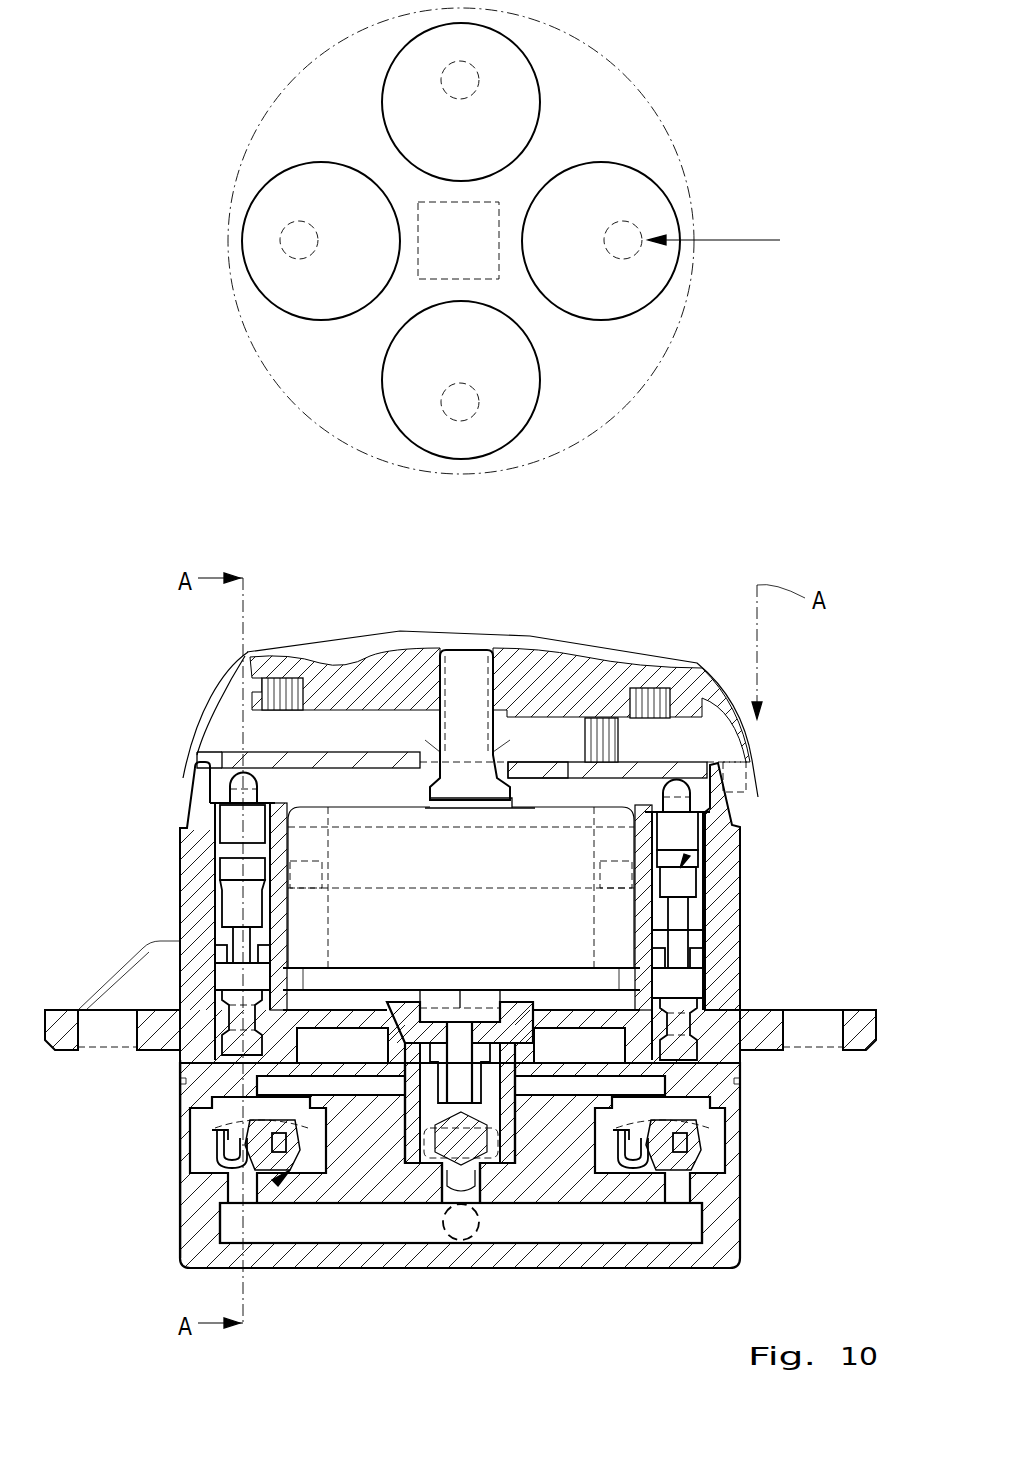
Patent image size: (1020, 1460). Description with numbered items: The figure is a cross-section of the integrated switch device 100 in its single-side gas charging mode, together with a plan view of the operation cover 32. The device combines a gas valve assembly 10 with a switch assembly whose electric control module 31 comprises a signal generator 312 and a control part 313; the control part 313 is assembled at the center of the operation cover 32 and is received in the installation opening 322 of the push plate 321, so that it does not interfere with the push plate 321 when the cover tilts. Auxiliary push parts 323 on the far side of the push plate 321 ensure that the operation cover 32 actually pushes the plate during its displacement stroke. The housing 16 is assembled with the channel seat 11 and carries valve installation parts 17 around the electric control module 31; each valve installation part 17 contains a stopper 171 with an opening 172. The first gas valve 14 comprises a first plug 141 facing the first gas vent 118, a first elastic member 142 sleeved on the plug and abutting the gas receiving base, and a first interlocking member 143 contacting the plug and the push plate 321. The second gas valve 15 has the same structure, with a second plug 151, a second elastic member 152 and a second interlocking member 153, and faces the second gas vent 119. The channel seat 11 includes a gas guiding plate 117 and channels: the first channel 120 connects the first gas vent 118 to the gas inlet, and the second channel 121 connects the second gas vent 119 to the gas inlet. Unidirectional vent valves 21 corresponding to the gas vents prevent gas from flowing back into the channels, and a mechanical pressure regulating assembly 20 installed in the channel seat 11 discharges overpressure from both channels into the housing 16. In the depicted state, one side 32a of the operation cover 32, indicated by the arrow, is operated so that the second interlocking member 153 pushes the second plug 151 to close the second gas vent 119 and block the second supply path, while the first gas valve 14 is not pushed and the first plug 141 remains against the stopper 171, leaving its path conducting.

The integrated switch device 100 is at (862, 66).
The operation cover 32 is at (672, 140).
The one side of the operation cover 32a is at (745, 243).
The control part 313 is at (430, 198).
The electric control module 31 is at (465, 550).
The signal generator 312 is at (357, 798).
The installation opening 322 is at (525, 770).
The auxiliary push parts 323 is at (592, 745).
The push plate 321 is at (678, 790).
The second interlocking member 153 is at (716, 758).
The valve installation parts 17 is at (740, 735).
The second gas valve 15 is at (718, 830).
The housing 16 is at (745, 855).
The opening 172 is at (740, 925).
The stopper 171 is at (770, 935).
The second plug 151 is at (843, 1010).
The second elastic member 152 is at (735, 1030).
The second gas vent 119 is at (680, 1085).
The channel seat 11 is at (738, 1108).
The first gas valve 14 is at (222, 878).
The first interlocking member 143 is at (225, 905).
The first plug 141 is at (225, 975).
The first elastic member 142 is at (222, 1060).
The first gas vent 118 is at (300, 1048).
The first channel 120 is at (225, 1225).
The unidirectional vent valves 21 is at (268, 1188).
The gas guiding plate 117 is at (345, 1012).
The mechanical pressure regulating assembly 20 is at (455, 1180).
The gas valve assembly 10 is at (513, 1272).
The second channel 121 is at (655, 1242).